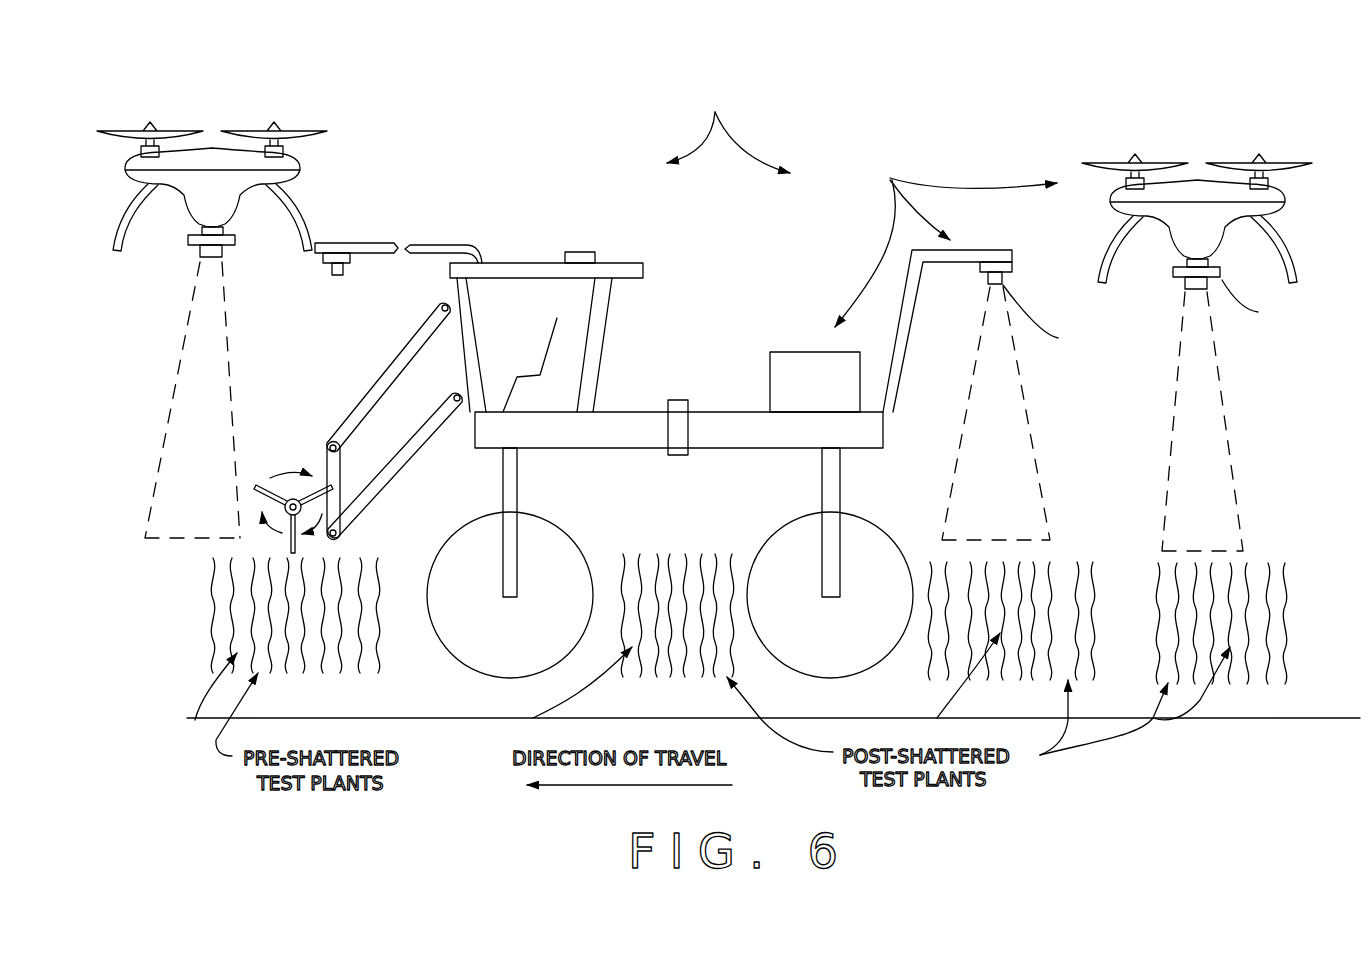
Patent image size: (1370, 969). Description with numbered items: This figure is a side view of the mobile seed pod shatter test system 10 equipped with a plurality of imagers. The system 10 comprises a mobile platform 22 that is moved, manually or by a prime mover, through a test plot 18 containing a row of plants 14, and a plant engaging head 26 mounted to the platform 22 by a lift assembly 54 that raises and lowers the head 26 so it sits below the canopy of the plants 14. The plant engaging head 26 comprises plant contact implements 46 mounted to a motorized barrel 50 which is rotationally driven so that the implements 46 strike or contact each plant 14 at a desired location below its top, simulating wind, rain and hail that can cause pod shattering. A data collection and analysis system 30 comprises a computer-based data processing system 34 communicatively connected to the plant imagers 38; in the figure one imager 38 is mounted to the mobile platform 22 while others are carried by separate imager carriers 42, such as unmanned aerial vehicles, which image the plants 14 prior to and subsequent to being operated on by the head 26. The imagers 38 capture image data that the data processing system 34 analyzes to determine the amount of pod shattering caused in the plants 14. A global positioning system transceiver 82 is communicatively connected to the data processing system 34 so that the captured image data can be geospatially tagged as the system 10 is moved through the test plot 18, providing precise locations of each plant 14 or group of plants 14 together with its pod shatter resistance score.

The mobile seed pod shatter test system 10 is at (728, 128).
The plants 14 is at (377, 573).
The test plot 18 is at (755, 719).
The mobile platform 22 is at (728, 357).
The plant engaging head 26 is at (282, 440).
The data collection and analysis system 30 is at (946, 234).
The data processing system 34 is at (829, 393).
The plant imager 38 is at (197, 248).
The imager carrier 42 is at (213, 150).
The plant contact implement 46 is at (267, 490).
The motorized barrel 50 is at (297, 500).
The lift assembly 54 is at (380, 355).
The global positioning system (GPS) transceiver 82 is at (590, 252).